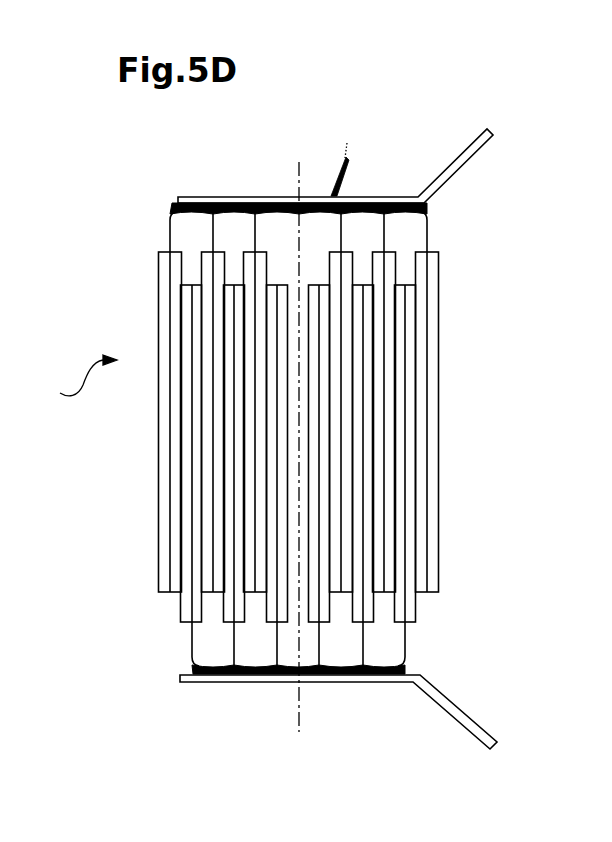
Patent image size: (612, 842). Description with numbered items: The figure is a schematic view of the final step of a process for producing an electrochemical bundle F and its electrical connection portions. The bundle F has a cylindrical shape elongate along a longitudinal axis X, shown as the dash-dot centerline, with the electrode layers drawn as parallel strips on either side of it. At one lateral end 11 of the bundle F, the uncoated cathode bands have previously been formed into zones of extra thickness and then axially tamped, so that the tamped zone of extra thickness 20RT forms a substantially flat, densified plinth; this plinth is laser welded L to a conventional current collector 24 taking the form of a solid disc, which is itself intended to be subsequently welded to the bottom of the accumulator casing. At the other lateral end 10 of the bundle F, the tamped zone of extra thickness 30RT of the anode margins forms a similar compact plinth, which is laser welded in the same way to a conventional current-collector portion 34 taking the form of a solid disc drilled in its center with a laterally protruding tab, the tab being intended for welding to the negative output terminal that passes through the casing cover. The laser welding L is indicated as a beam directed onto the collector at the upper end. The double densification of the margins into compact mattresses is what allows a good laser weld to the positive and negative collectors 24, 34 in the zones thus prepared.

The lateral end of the bundle (anode side) 10 is at (180, 233).
The lateral end of the bundle (cathode side) 11 is at (393, 637).
The tamped zone of extra thickness of the cathode 20RT is at (217, 665).
The tamped zone of extra thickness of the anode 30RT is at (173, 208).
The current collector 24 is at (248, 682).
The current-collector portion 34 is at (463, 168).
The laser welding L is at (347, 141).
The longitudinal axis X is at (286, 439).
The bundle F is at (78, 378).